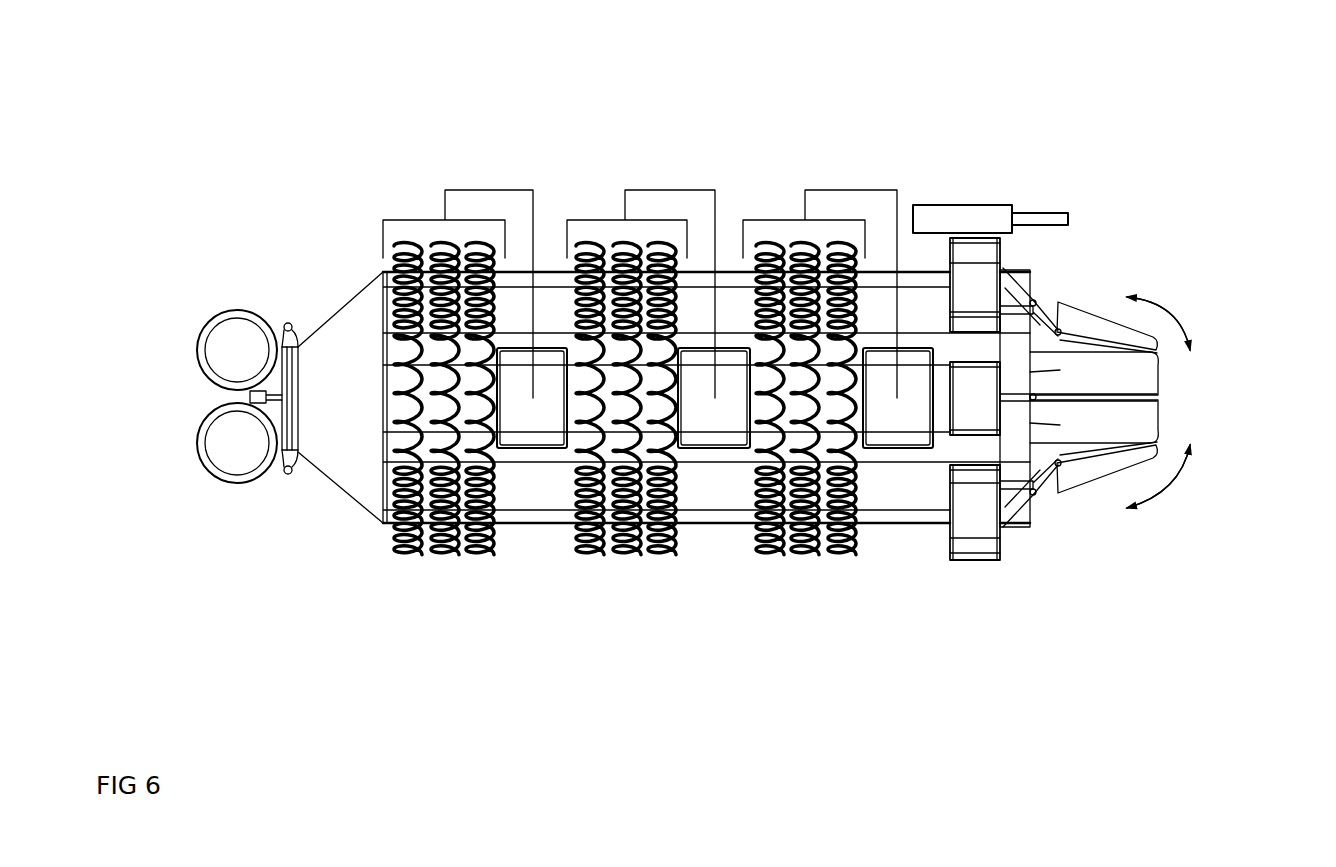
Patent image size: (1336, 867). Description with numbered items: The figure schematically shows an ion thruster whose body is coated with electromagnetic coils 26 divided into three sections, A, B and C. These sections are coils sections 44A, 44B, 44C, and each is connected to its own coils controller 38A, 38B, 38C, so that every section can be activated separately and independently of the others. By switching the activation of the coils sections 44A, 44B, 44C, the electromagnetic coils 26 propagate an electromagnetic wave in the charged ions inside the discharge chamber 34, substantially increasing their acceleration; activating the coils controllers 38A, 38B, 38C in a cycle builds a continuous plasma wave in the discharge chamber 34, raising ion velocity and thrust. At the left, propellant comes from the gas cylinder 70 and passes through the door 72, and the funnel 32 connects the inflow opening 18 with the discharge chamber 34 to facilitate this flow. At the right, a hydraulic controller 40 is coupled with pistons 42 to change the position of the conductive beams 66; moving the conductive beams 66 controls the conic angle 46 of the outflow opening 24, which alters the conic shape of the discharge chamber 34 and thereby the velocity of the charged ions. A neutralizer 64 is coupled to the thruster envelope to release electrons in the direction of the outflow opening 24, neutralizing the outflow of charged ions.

The inflow opening 18 is at (185, 398).
The outflow opening 24 is at (1215, 405).
The electromagnetic coils 26 is at (415, 550).
The funnel 32 is at (298, 243).
The discharge chamber 34 is at (1078, 330).
The coils controller 38A is at (532, 433).
The coils controller 38B is at (727, 433).
The coils controller 38C is at (910, 432).
The hydraulic controller 40 is at (973, 252).
The pistons 42 is at (1033, 270).
The coils section 44A is at (492, 153).
The coils section 44B is at (665, 153).
The coils section 44C is at (845, 148).
The conic angle 46 is at (1195, 298).
The neutralizer 64 is at (1002, 213).
The conductive beams 66 is at (1122, 435).
The gas cylinder 70 is at (222, 455).
The door 72 is at (292, 326).